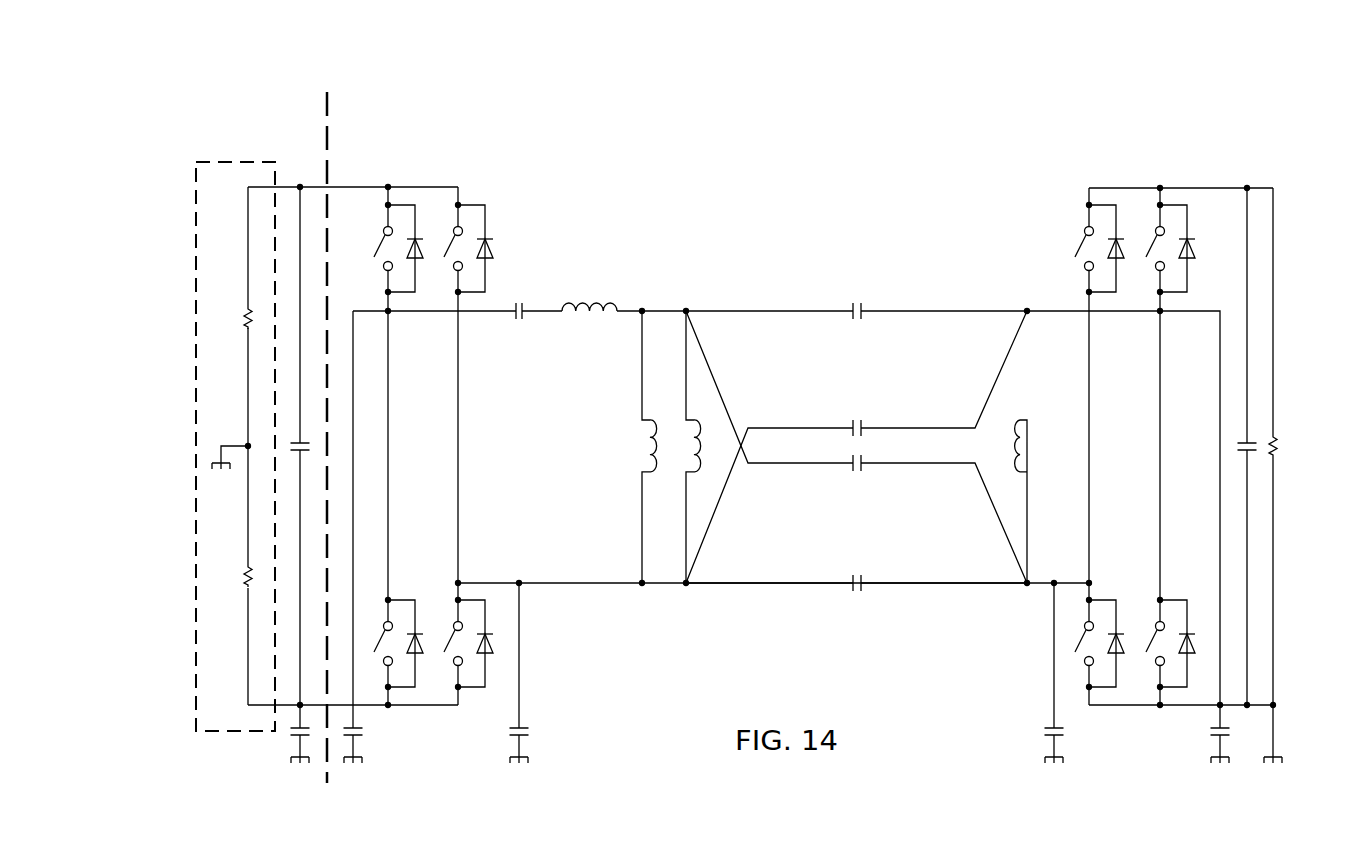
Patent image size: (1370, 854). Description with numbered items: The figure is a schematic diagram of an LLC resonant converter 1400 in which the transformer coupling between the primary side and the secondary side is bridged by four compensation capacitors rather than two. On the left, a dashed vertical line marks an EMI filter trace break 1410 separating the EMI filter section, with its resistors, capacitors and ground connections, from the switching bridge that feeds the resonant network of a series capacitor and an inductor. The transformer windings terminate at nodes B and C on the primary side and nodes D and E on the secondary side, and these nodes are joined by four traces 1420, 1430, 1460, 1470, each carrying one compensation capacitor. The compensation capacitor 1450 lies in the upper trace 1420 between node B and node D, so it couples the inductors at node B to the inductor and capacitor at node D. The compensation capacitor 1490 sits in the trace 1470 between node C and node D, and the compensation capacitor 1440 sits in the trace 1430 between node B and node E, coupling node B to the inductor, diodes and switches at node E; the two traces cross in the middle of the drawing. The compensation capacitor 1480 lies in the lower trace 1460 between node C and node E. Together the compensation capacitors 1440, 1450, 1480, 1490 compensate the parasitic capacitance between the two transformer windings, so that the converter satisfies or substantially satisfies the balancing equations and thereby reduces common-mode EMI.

The LLC resonant converter 1400 is at (976, 119).
The EMI filter trace break 1410 is at (327, 146).
The trace 1420 is at (769, 309).
The trace 1430 is at (780, 466).
The compensation capacitor 1440 is at (857, 472).
The compensation capacitor 1450 is at (857, 302).
The trace 1460 is at (769, 585).
The trace 1470 is at (780, 427).
The compensation capacitor 1480 is at (857, 592).
The compensation capacitor 1490 is at (857, 419).